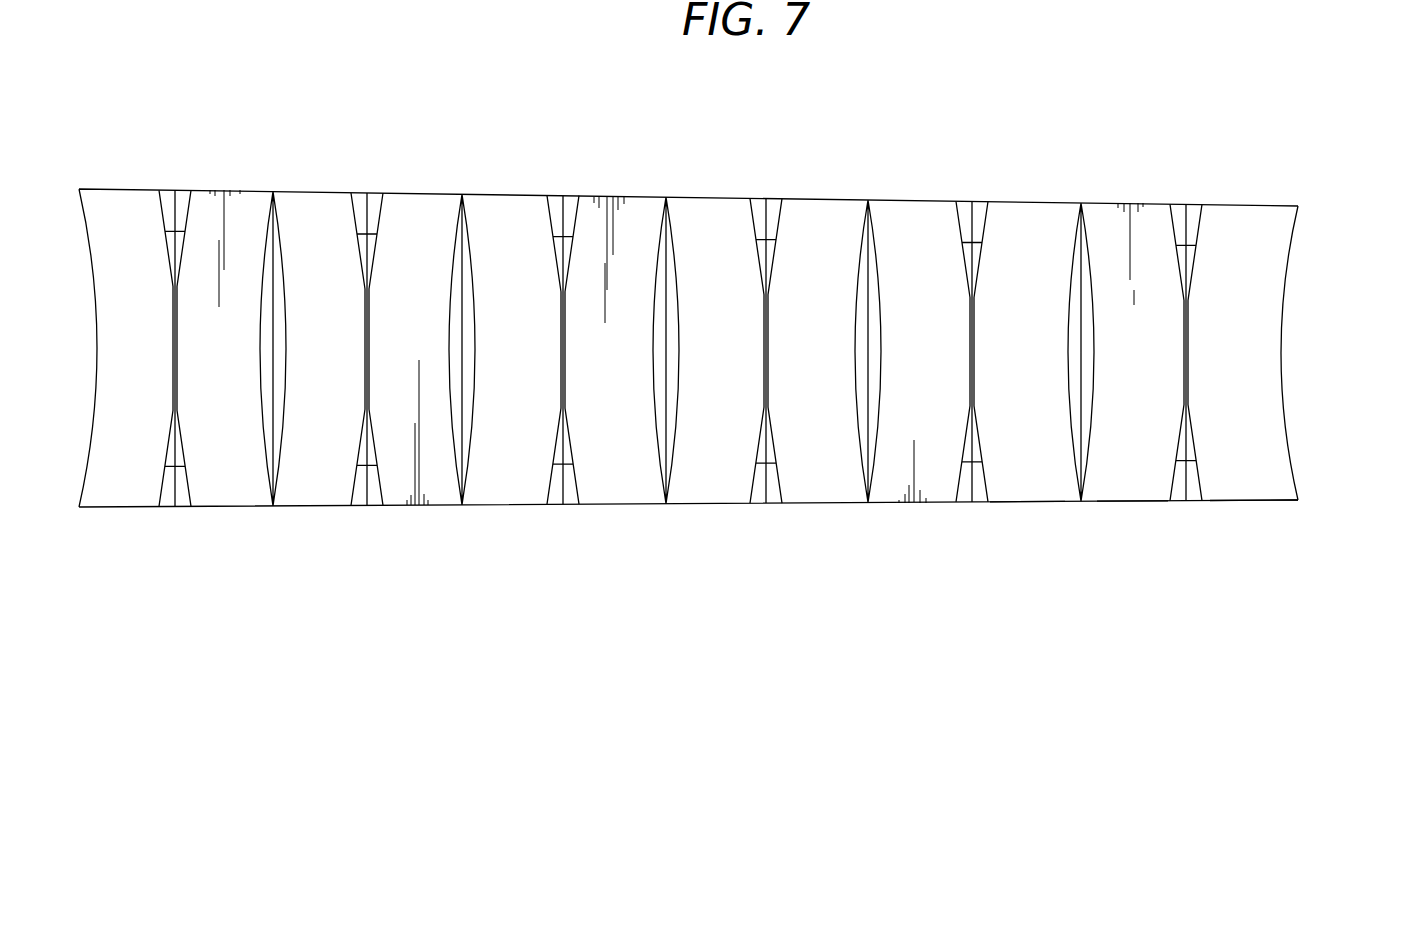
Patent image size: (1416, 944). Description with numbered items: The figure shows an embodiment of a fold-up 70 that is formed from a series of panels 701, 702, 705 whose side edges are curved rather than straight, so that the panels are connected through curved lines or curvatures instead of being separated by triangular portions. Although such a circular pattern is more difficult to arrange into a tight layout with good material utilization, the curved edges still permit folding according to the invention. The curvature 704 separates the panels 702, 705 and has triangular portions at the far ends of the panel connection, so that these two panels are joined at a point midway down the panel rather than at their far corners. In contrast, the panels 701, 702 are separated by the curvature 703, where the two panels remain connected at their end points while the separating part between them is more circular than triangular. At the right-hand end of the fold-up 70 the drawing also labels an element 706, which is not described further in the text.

The fold-up 70 is at (937, 553).
The panel 701 is at (1017, 502).
The panel 702 is at (1140, 502).
The curvature 703 is at (1091, 435).
The curvature 704 is at (1187, 403).
The panel 705 is at (1282, 502).
The side surface 706 is at (1282, 350).